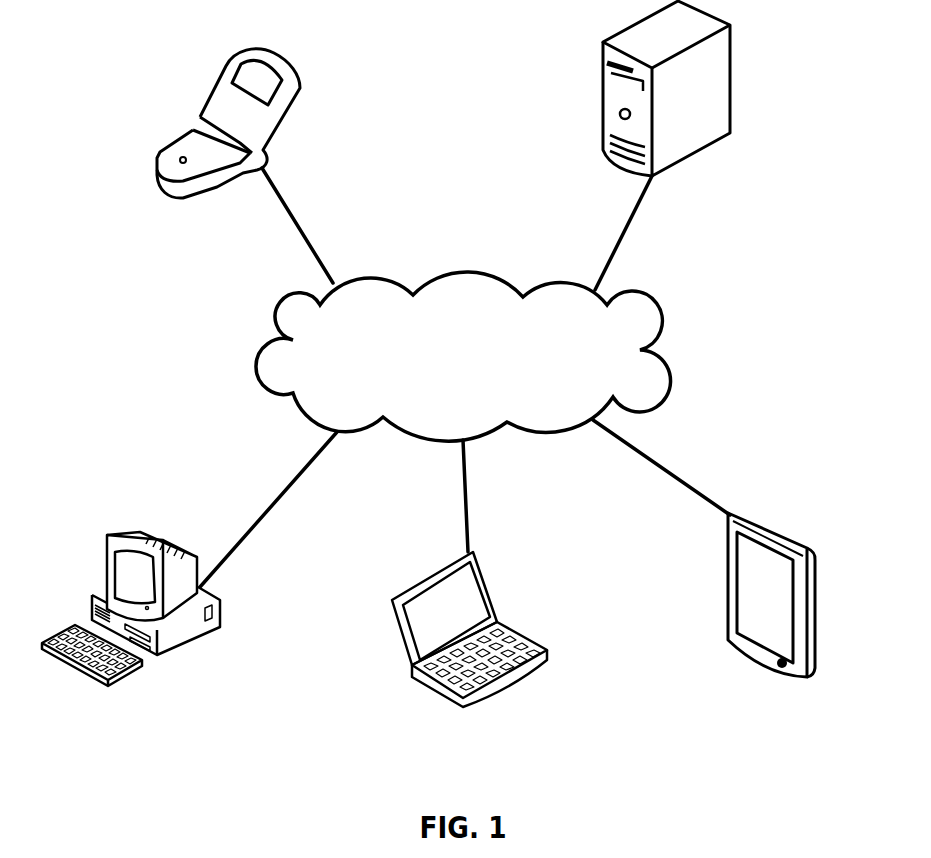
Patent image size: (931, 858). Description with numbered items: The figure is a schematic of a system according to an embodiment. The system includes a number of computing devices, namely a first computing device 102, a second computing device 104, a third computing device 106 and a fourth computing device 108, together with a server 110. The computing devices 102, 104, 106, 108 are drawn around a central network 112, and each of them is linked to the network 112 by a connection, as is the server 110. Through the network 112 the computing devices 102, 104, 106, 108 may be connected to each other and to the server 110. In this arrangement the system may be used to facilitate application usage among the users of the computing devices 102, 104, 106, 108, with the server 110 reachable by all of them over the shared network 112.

The computing device 102 is at (171, 123).
The computing device 104 is at (748, 626).
The computing device 106 is at (464, 659).
The computing device 108 is at (143, 636).
The server 110 is at (708, 88).
The network 112 is at (463, 356).